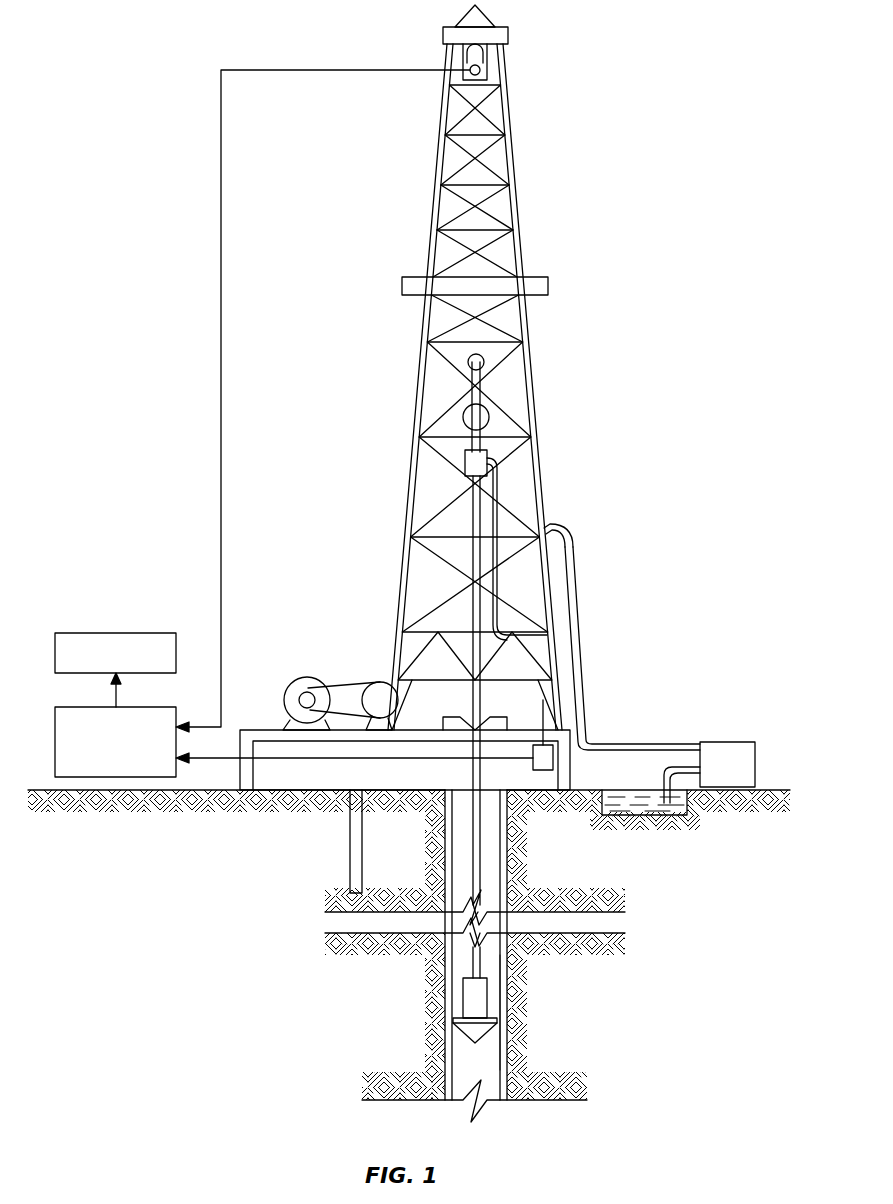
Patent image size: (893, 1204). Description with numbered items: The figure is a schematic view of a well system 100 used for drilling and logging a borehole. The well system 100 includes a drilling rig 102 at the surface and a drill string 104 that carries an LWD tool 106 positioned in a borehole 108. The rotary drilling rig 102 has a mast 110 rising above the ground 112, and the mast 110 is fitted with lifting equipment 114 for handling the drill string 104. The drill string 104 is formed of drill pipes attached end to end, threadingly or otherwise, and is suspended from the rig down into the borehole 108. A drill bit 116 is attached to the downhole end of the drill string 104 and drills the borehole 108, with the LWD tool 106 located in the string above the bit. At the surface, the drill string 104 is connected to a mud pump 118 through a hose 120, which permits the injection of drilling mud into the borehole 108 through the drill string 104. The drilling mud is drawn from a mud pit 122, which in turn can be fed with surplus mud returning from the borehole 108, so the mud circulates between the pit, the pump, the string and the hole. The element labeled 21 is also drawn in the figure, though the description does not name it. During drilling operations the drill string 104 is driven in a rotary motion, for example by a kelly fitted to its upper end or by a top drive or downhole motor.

The well system 100 is at (117, 88).
The drilling rig 102 is at (397, 203).
The mast 110 is at (514, 158).
The lifting equipment 114 is at (486, 335).
The drill string 21 is at (466, 548).
The ground 112 is at (318, 788).
The drill string 104 is at (478, 822).
The LWD tool 106 is at (468, 958).
The borehole 108 is at (470, 1065).
The drill bit 116 is at (502, 1000).
The hose 120 is at (573, 640).
The mud pump 118 is at (727, 742).
The mud pit 122 is at (640, 812).